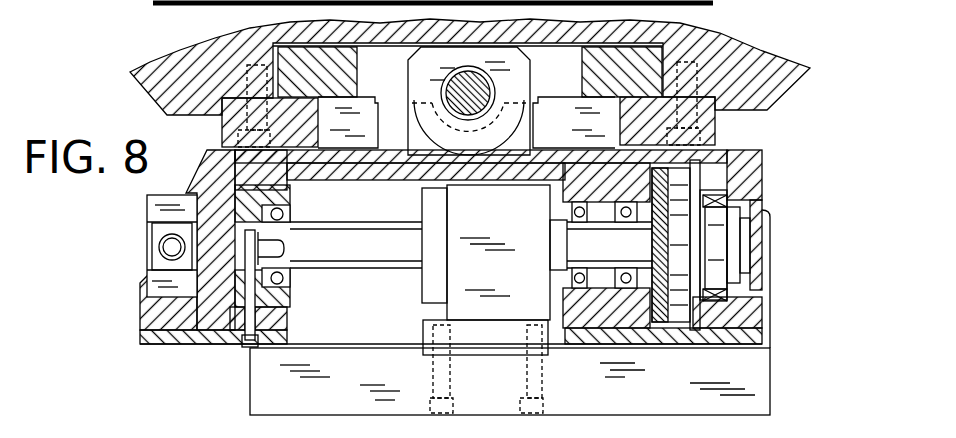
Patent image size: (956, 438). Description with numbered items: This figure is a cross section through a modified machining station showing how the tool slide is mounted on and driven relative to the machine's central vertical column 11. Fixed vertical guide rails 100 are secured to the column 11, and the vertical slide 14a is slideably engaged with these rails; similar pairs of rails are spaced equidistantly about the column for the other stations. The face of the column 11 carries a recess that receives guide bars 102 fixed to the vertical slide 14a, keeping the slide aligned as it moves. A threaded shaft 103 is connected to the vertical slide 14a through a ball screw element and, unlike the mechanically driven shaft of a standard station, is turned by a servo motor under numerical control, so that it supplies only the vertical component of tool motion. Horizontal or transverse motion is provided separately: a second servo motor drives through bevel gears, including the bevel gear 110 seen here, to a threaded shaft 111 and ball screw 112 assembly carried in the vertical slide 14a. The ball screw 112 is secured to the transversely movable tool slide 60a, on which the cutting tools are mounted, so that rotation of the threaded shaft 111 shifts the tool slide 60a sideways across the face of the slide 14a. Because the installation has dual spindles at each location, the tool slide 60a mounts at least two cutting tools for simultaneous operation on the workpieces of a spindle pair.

The central vertical column 11 is at (752, 62).
The guide bars 102 is at (338, 75).
The fixed vertical guide rails 100 is at (712, 127).
The threaded shaft 103 is at (463, 100).
The vertical slide 14a is at (152, 317).
The transversely movable tool slide 60a is at (267, 377).
The threaded shaft 111 is at (337, 255).
The ball screw 112 is at (465, 273).
The bevel gear 110 is at (657, 238).